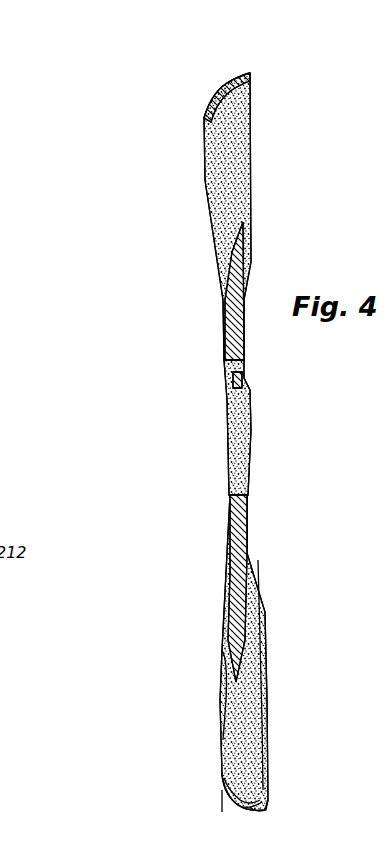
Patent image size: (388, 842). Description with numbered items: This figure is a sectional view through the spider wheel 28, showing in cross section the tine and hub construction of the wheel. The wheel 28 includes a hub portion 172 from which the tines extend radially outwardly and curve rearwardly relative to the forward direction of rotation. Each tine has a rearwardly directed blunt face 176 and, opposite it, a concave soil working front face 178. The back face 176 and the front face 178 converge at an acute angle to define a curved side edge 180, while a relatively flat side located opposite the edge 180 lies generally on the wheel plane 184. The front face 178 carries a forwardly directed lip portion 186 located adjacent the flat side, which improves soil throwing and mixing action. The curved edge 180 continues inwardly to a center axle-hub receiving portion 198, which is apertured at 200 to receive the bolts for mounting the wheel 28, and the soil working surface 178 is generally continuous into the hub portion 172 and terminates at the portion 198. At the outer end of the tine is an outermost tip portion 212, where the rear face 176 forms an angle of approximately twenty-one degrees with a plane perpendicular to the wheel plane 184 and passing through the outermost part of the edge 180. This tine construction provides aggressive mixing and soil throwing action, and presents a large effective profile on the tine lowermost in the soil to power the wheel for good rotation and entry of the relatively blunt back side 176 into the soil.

The wheel 28 is at (247, 73).
The blunt face 176 is at (248, 192).
The hub portion 172 is at (227, 310).
The aperture 200 is at (226, 374).
The center axle-hub receiving portion 198 is at (249, 520).
The soil working front face 178 is at (266, 690).
The curved side edge 180 is at (268, 752).
The lip portion 186 is at (225, 756).
The wheel plane 184 is at (221, 800).
The tip portion 212 is at (266, 806).